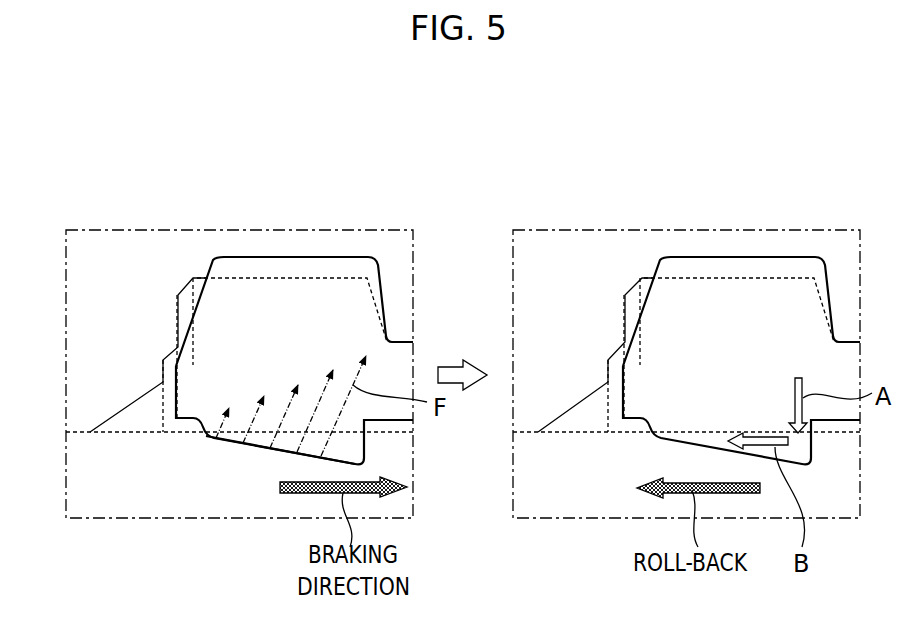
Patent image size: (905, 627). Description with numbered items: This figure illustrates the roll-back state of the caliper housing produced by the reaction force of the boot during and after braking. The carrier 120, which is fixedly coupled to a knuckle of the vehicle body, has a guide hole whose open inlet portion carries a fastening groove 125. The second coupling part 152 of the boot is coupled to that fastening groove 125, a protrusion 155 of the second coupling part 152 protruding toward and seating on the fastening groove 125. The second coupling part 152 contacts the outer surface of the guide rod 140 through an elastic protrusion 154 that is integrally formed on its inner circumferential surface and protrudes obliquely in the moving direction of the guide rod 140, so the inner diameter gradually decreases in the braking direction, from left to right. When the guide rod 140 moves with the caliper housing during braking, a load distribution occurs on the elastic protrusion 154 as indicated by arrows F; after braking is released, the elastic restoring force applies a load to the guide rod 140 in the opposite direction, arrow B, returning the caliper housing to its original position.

The carrier 120 is at (116, 245).
The fastening groove 125 is at (212, 262).
The guide rod 140 is at (108, 500).
The second coupling part 152 is at (172, 346).
The elastic protrusion 154 is at (257, 440).
The protrusion 155 is at (318, 262).